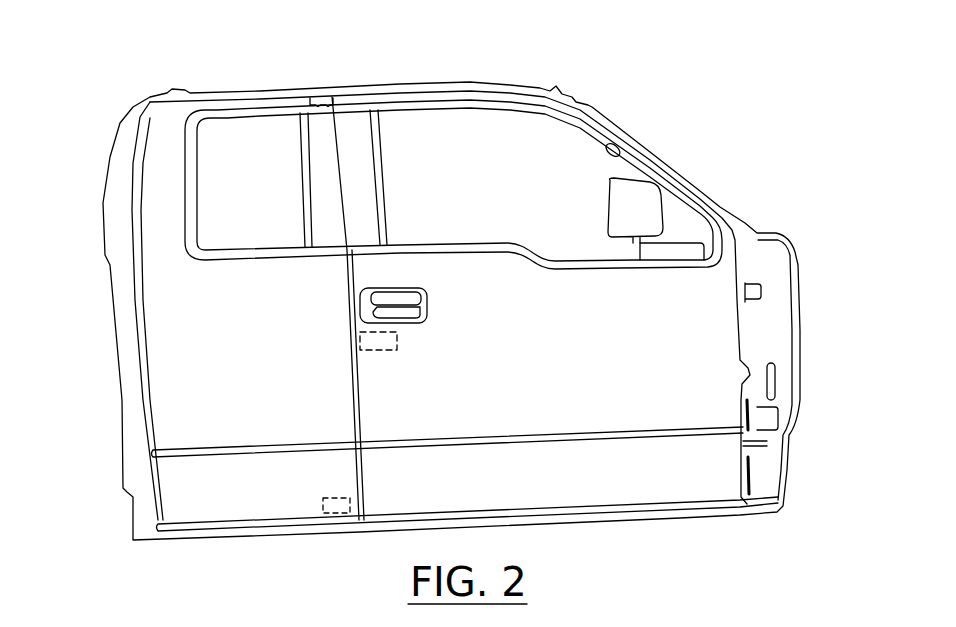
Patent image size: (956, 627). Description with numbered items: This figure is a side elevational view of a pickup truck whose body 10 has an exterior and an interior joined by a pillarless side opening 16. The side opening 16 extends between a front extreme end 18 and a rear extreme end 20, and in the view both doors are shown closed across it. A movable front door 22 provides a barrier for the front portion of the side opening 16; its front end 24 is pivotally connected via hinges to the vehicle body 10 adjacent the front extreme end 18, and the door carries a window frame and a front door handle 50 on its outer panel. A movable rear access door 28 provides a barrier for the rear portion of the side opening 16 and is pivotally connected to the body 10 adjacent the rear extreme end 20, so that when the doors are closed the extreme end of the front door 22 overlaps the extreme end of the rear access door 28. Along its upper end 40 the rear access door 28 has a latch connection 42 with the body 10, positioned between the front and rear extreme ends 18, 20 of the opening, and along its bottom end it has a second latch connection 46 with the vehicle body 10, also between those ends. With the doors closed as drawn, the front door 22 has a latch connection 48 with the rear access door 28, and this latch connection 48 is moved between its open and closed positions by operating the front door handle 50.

The vehicle body 10 is at (745, 222).
The pillarless side opening 16 is at (617, 145).
The front extreme end of the side opening 18 is at (740, 310).
The rear extreme end of the side opening 20 is at (150, 368).
The front door 22 is at (663, 277).
The front end of the front door 24 is at (735, 352).
The rear access door 28 is at (232, 430).
The upper end of the second door 40 is at (263, 103).
The upper latch connection 42 is at (330, 82).
The bottom latch connection 46 is at (335, 495).
The door-to-door latch connection 48 is at (400, 343).
The front door handle 50 is at (407, 293).